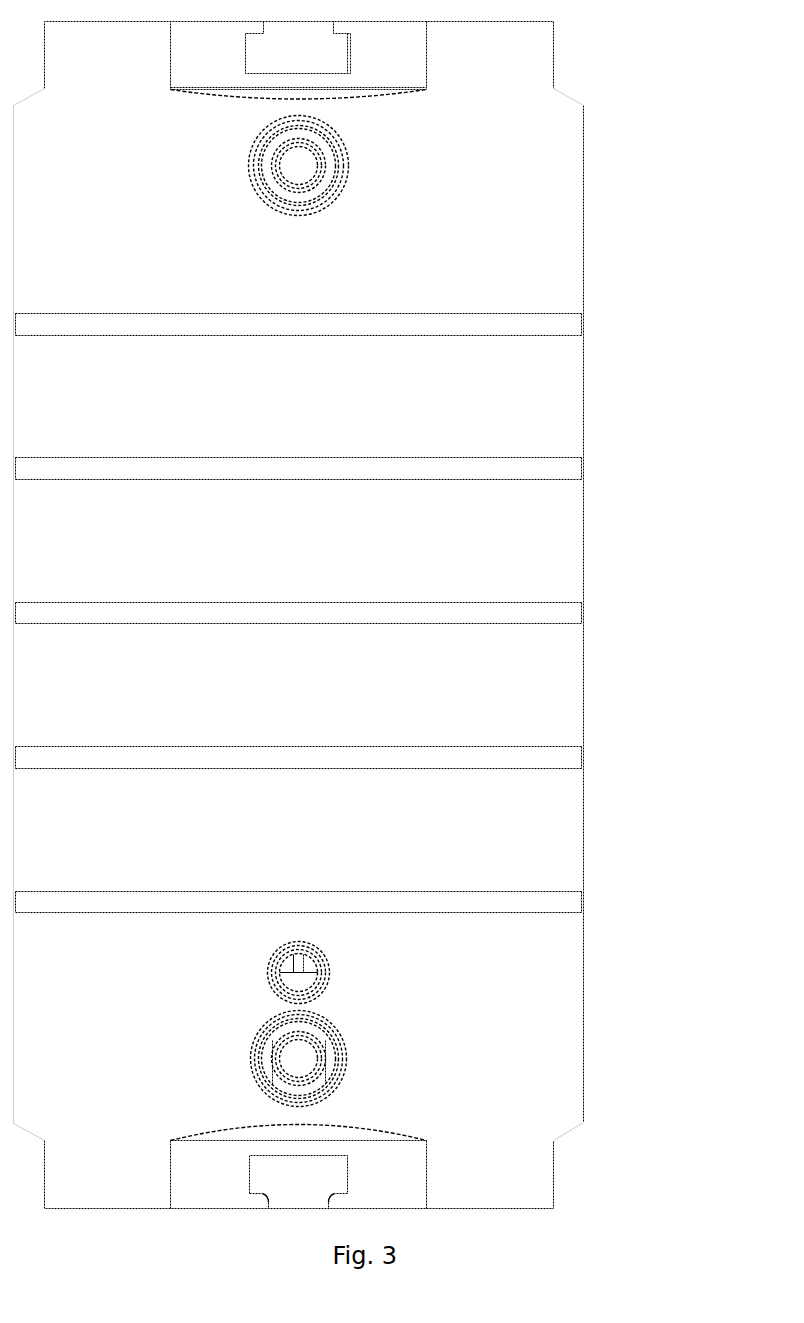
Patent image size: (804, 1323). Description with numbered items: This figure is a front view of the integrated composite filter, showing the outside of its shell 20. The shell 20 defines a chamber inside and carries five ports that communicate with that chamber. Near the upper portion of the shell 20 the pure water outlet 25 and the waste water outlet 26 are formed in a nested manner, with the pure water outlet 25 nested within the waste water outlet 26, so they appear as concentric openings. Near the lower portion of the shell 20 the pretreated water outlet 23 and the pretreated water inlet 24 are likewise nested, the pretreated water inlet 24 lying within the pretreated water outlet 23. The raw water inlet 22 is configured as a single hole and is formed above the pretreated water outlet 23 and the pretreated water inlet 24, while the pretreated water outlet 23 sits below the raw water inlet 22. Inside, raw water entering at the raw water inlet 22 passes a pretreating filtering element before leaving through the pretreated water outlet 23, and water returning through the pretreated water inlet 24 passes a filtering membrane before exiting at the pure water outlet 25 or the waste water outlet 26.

The shell 20 is at (524, 563).
The raw water inlet 22 is at (305, 980).
The pretreated water outlet 23 is at (318, 1089).
The pretreated water inlet 24 is at (298, 1058).
The pure water outlet 25 is at (305, 166).
The waste water outlet 26 is at (317, 192).